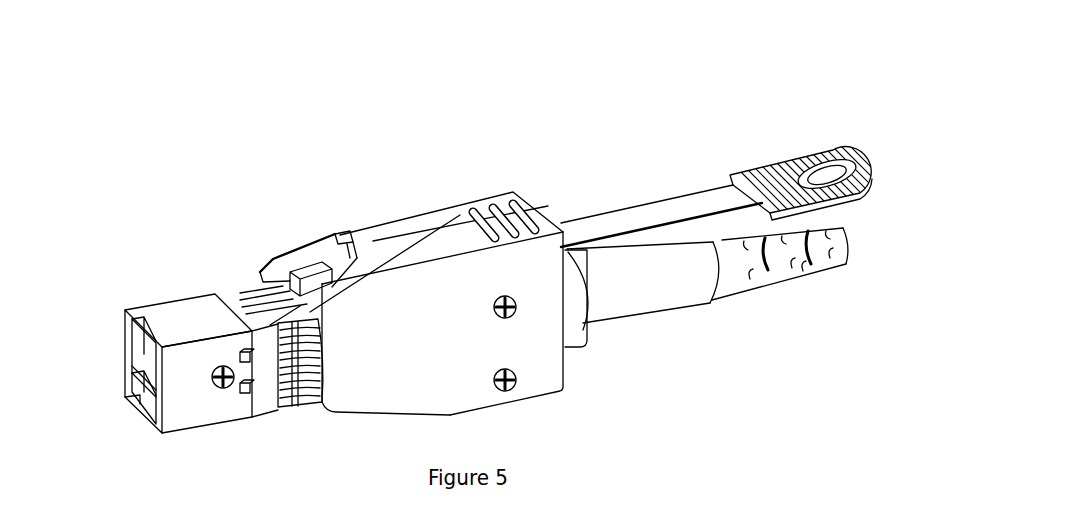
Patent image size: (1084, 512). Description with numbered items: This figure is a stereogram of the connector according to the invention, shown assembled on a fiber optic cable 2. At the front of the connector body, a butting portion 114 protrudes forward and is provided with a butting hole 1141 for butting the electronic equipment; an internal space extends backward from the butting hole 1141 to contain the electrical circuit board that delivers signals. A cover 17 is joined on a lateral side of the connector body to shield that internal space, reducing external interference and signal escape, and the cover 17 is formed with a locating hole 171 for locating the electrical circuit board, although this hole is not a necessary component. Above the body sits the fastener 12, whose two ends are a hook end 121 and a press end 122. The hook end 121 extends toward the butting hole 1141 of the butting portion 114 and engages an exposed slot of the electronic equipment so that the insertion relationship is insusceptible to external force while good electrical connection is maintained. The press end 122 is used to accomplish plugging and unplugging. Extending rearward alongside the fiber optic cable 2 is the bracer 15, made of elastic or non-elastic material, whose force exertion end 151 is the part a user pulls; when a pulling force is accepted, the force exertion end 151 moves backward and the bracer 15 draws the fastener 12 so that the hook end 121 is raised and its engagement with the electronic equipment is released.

The butting portion 114 is at (177, 307).
The butting hole 1141 is at (128, 352).
The locating hole 171 is at (243, 357).
The hook end 121 is at (283, 265).
The fastener 12 is at (443, 230).
The press end 122 is at (545, 207).
The cover 17 is at (543, 373).
The bracer 15 is at (663, 213).
The force exertion end 151 is at (803, 158).
The fiber optic cable 2 is at (615, 305).